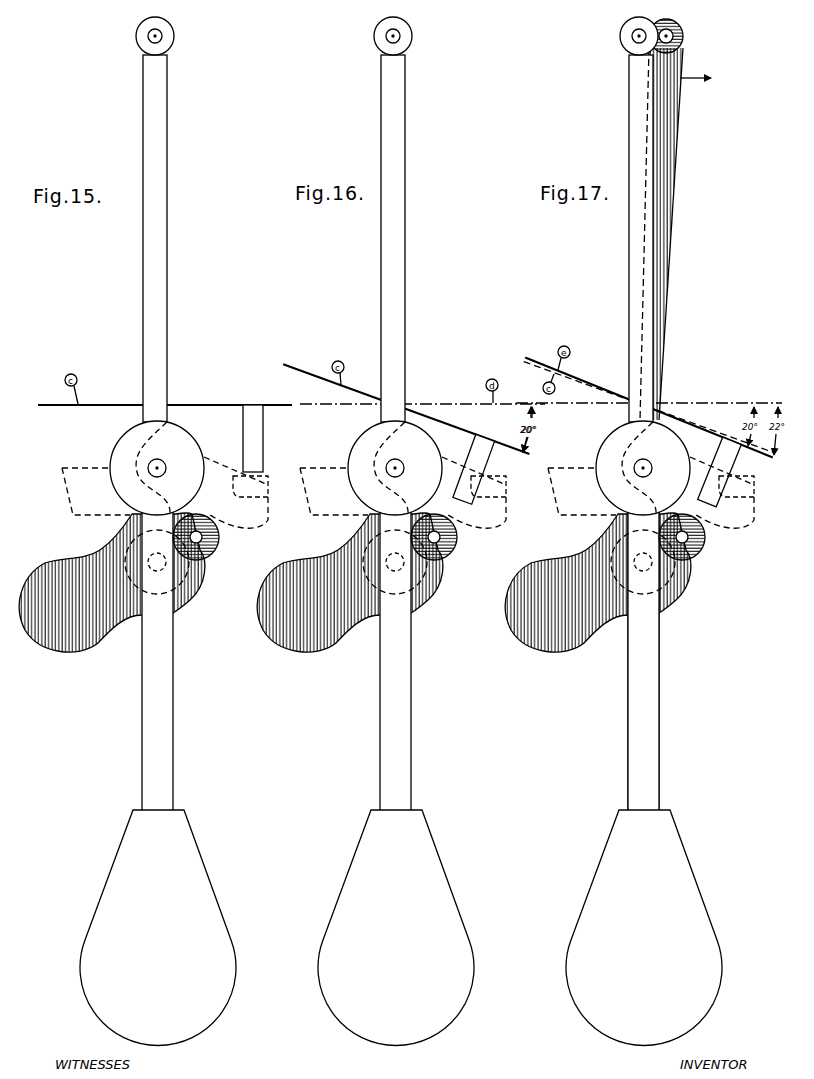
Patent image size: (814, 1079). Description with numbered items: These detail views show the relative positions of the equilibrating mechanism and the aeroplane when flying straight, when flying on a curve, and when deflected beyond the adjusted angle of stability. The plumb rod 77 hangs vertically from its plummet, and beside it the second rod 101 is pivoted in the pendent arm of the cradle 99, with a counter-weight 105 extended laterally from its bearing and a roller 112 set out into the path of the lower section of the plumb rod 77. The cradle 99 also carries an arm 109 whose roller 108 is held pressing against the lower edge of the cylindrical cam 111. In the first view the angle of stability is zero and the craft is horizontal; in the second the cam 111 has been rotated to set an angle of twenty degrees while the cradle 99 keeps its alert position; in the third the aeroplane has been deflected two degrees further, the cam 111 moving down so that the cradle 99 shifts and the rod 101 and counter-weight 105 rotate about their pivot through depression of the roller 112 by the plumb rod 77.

In FIG. 16, the plumb rod 77 is at (409, 661).
In FIG. 17, the plumb rod 77 is at (642, 432).
In FIG. 15, the cradle 99 is at (110, 464).
In FIG. 16, the cradle 99 is at (382, 468).
In FIG. 17, the cradle 99 is at (631, 468).
In FIG. 17, the second rod 101 is at (675, 219).
In FIG. 15, the counter-weight 105 is at (81, 643).
In FIG. 16, the counter-weight 105 is at (350, 593).
In FIG. 17, the counter-weight 105 is at (598, 589).
In FIG. 15, the roller 108 is at (258, 481).
In FIG. 16, the roller 108 is at (507, 486).
In FIG. 17, the roller 108 is at (753, 486).
In FIG. 15, the arm 109 is at (252, 518).
In FIG. 15, the cylindrical cam 111 is at (264, 435).
In FIG. 16, the cylindrical cam 111 is at (496, 469).
In FIG. 17, the cylindrical cam 111 is at (743, 472).
In FIG. 15, the roller 112 is at (196, 537).
In FIG. 16, the roller 112 is at (434, 537).
In FIG. 17, the roller 112 is at (696, 540).